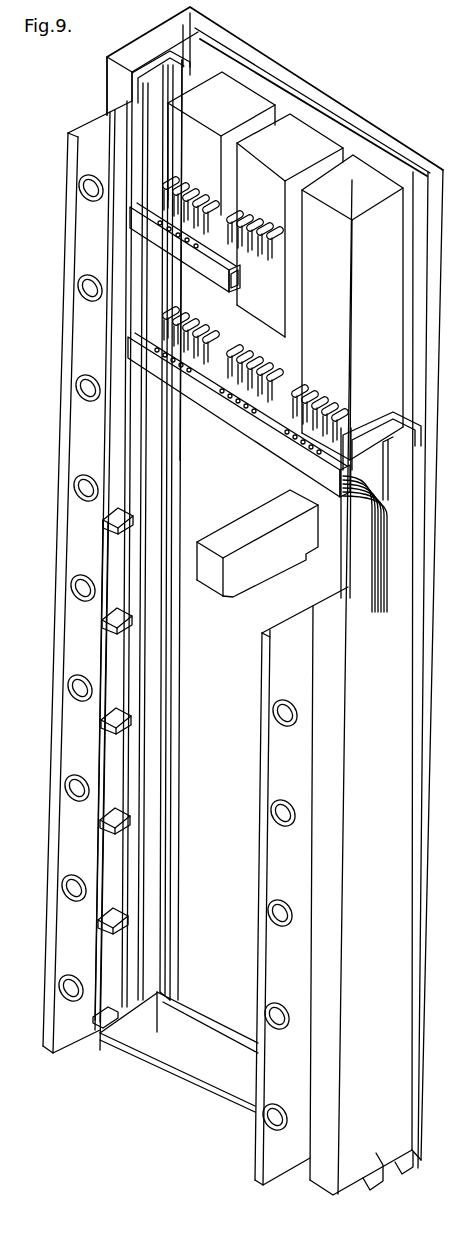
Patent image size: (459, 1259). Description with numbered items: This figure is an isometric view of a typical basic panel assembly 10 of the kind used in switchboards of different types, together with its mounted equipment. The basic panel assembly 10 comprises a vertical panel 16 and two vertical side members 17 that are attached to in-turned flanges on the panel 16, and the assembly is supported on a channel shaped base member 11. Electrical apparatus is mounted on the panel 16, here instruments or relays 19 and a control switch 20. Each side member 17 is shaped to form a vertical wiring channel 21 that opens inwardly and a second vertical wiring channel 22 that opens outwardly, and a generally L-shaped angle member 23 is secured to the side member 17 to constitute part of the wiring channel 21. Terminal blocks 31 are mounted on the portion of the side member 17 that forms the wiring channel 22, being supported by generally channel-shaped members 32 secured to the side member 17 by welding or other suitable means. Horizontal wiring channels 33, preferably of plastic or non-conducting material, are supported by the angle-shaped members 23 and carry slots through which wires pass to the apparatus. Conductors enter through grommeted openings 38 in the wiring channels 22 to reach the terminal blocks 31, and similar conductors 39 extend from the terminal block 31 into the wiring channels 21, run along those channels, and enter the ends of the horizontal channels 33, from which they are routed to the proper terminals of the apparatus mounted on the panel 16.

The basic panel assembly 10 is at (228, 662).
The channel shaped base member 11 is at (390, 1175).
The vertical panel 16 is at (330, 104).
The vertical side member 17 is at (78, 100).
The instruments or relays 19 is at (248, 106).
The control switch 20 is at (246, 524).
The vertical wiring channel 21 is at (160, 77).
The second vertical wiring channel 22 is at (308, 667).
The L-shaped angle member 23 is at (224, 77).
The terminal block 31 is at (116, 748).
The channel-shaped member 32 is at (122, 222).
The horizontal wiring channel 33 is at (207, 271).
The grommeted opening 38 is at (78, 806).
The conductor 39 is at (380, 580).